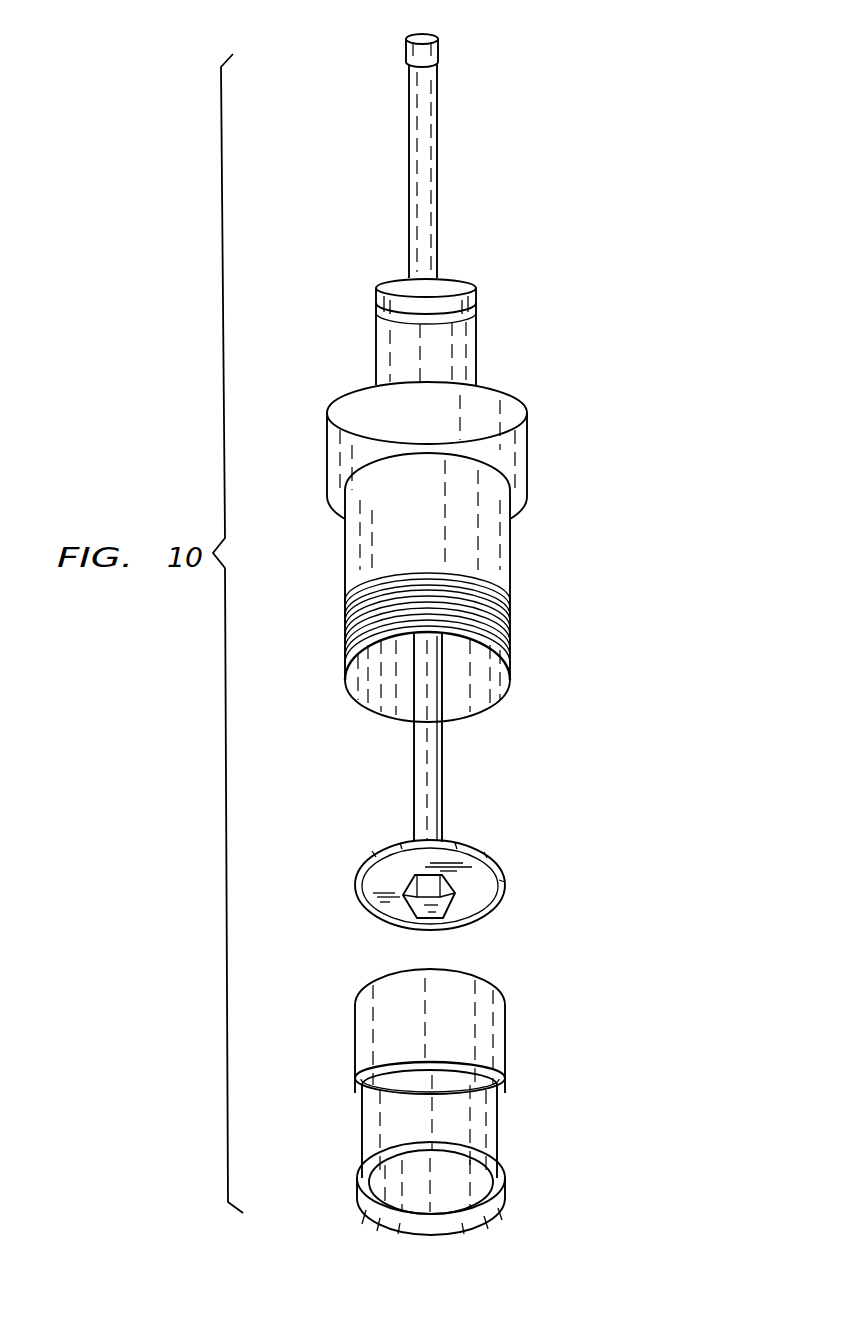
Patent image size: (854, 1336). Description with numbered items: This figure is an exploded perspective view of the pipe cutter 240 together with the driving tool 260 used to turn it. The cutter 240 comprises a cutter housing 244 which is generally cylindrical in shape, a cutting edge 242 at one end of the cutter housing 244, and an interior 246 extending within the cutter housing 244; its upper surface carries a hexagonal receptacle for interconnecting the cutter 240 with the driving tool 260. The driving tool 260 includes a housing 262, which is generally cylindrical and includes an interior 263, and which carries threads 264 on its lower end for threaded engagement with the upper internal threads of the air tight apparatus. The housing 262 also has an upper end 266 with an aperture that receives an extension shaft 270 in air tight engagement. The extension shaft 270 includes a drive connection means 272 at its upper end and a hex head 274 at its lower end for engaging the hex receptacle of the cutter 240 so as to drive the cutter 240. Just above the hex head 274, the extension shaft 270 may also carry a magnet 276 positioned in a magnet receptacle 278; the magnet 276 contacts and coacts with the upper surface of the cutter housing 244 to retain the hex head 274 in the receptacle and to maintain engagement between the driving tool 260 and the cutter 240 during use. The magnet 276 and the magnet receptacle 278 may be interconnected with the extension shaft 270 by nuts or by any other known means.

The cutter 240 is at (530, 1072).
The cutting edge 242 is at (500, 1212).
The cutter housing 244 is at (498, 1139).
The interior 246 is at (448, 1196).
The driving tool 260 is at (565, 477).
The housing 262 is at (510, 561).
The interior 263 is at (493, 684).
The threads 264 is at (508, 639).
The upper end 266 is at (460, 283).
The extension shaft 270 is at (428, 167).
The drive connection means 272 is at (438, 50).
The hex head 274 is at (449, 896).
The magnet 276 is at (487, 883).
The magnet receptacle 278 is at (356, 880).